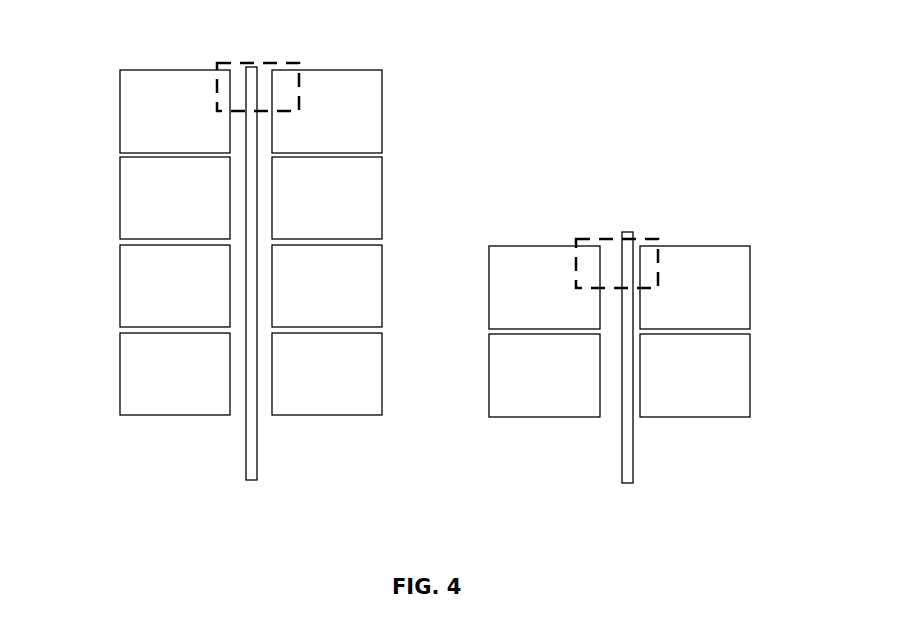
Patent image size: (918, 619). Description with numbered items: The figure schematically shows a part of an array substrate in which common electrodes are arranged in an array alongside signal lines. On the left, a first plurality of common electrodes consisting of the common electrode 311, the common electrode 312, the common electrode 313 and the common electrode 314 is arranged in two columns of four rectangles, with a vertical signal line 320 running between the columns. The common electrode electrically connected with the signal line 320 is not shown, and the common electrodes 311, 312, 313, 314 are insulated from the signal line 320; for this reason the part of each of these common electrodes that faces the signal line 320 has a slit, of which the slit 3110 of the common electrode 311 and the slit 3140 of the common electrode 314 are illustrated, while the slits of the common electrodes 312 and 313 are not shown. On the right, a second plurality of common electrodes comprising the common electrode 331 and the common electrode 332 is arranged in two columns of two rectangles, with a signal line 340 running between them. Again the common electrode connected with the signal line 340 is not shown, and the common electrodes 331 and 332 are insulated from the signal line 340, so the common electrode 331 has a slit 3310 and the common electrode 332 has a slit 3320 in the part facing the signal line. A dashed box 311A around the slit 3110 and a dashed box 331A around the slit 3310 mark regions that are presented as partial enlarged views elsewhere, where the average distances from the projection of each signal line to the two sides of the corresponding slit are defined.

The common electrode 311 is at (142, 110).
The common electrode 312 is at (142, 212).
The common electrode 313 is at (142, 293).
The common electrode 314 is at (142, 377).
The signal line 320 is at (249, 465).
The dashed box 311A is at (298, 63).
The slit 3110 is at (242, 85).
The slit 3140 is at (242, 408).
The common electrode 331 is at (523, 320).
The common electrode 332 is at (523, 407).
The signal line 340 is at (626, 472).
The dashed box 331A is at (658, 240).
The slit 3310 is at (611, 263).
The slit 3320 is at (612, 398).